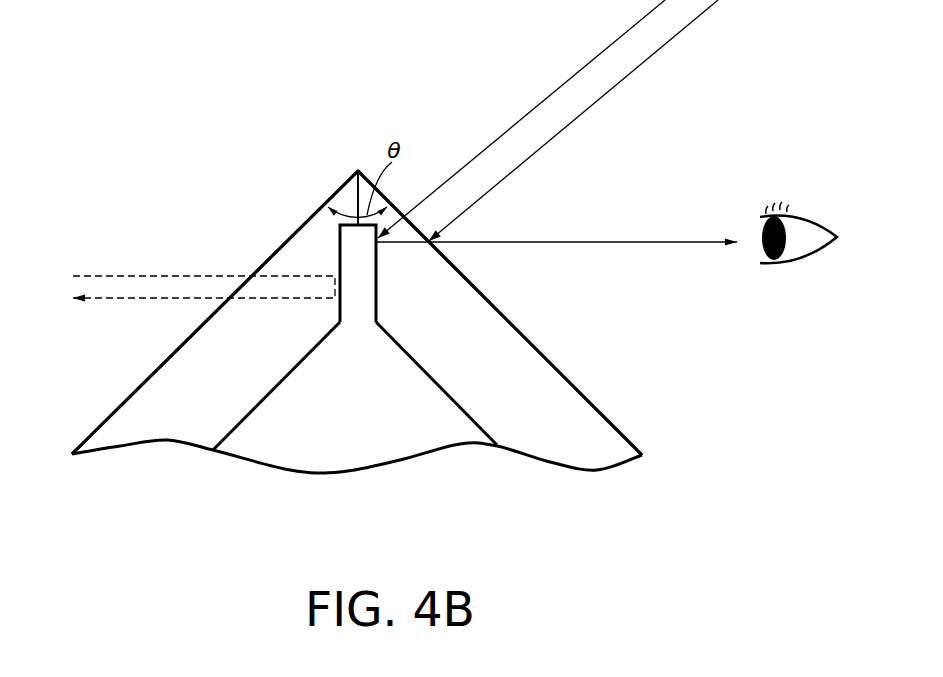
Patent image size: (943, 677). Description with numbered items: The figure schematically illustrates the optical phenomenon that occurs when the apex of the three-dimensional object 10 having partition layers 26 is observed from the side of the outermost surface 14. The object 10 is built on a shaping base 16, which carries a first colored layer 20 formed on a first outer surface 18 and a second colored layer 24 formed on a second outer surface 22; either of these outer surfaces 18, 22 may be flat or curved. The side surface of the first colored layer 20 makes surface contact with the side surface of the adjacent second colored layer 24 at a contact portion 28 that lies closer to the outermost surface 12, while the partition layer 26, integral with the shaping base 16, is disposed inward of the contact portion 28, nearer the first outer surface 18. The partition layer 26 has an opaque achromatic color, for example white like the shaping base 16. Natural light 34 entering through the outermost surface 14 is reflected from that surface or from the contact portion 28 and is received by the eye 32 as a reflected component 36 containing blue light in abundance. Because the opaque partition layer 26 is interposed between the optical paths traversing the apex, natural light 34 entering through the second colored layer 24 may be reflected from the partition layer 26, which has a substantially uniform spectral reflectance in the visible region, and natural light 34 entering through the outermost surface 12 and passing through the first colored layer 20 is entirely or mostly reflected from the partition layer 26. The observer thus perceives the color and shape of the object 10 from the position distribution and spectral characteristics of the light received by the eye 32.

The three-dimensional object 10 is at (192, 117).
The outermost surface 12 is at (182, 346).
The outermost surface 14 is at (521, 331).
The shaping base 16 is at (333, 448).
The first outer surface 18 is at (253, 410).
The first colored layer 20 is at (143, 423).
The second outer surface 22 is at (452, 397).
The second colored layer 24 is at (575, 422).
The partition layer 26 is at (350, 303).
The contact portion 28 is at (350, 191).
The eye 32 is at (783, 263).
The natural light 34 is at (567, 80).
The reflected component 36 is at (548, 240).